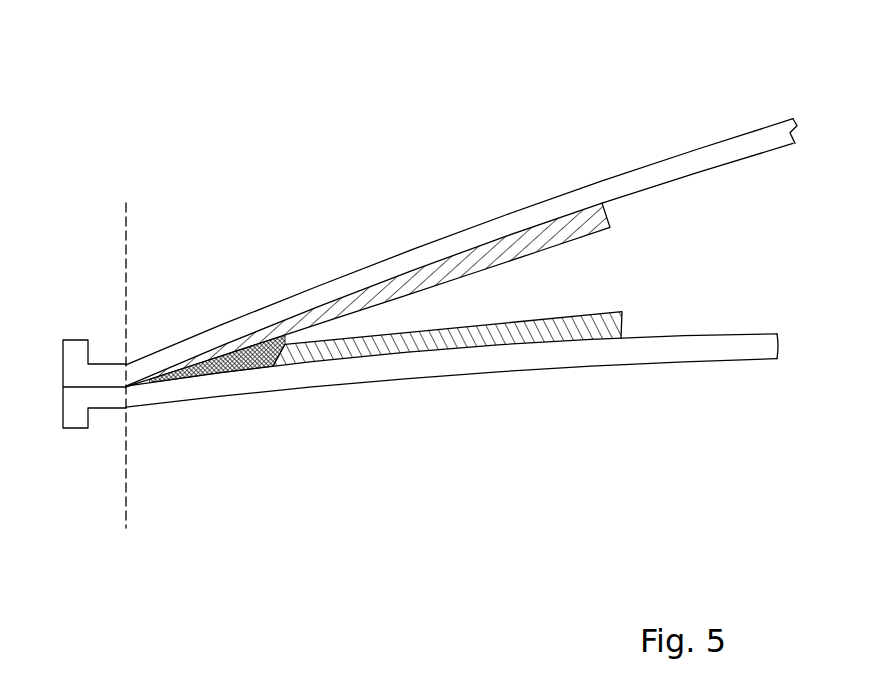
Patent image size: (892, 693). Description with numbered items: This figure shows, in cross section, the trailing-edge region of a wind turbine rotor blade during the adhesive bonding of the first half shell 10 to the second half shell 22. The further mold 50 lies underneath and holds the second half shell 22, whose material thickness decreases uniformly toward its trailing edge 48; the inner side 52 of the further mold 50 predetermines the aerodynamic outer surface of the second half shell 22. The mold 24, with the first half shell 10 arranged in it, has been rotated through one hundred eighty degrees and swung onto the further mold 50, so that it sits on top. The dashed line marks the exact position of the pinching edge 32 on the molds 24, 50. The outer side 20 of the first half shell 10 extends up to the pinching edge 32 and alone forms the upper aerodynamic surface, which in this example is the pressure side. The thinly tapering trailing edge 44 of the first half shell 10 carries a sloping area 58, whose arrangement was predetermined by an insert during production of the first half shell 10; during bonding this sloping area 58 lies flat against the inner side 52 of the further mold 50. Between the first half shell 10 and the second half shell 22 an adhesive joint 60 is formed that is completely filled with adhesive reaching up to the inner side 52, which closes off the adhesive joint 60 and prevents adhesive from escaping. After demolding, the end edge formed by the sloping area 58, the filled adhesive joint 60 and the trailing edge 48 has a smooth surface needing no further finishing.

The first half shell 10 is at (475, 253).
The outer side 20 is at (325, 300).
The second half shell 22 is at (514, 325).
The mold 24 is at (625, 180).
The pinching edge 32 is at (126, 387).
The trailing edge 44 is at (184, 360).
The trailing edge 48 is at (236, 366).
The further mold 50 is at (660, 353).
The inner side 52 is at (717, 337).
The sloping area 58 is at (163, 375).
The adhesive joint 60 is at (262, 358).